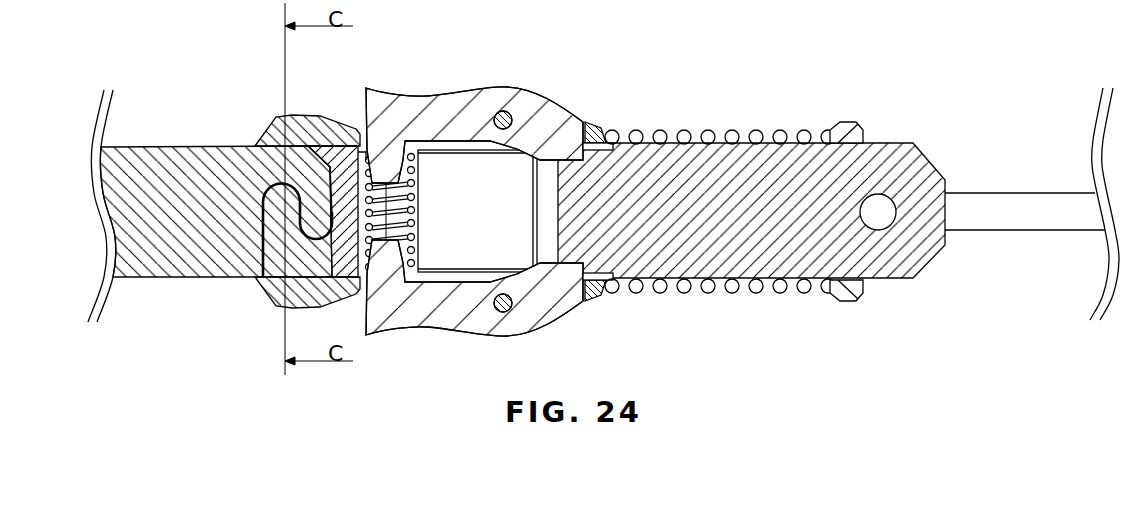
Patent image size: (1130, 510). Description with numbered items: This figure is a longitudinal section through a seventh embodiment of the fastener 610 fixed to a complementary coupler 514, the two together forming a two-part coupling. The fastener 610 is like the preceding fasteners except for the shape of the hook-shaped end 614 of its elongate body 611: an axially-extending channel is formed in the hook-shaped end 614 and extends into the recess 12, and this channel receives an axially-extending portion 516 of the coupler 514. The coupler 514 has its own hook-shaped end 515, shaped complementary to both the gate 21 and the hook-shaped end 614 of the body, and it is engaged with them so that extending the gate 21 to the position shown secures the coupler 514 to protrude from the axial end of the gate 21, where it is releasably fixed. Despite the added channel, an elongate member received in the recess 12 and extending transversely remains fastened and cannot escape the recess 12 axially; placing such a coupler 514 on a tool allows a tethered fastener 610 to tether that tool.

The complementary coupler 514 is at (153, 146).
The axially-extending portion 516 is at (255, 144).
The hook-shaped end 515 is at (314, 134).
The recess 12 is at (332, 142).
The gate 21 is at (594, 122).
The elongate body 611 is at (912, 158).
The hook-shaped end 614 is at (247, 257).
The fastener 610 is at (197, 349).